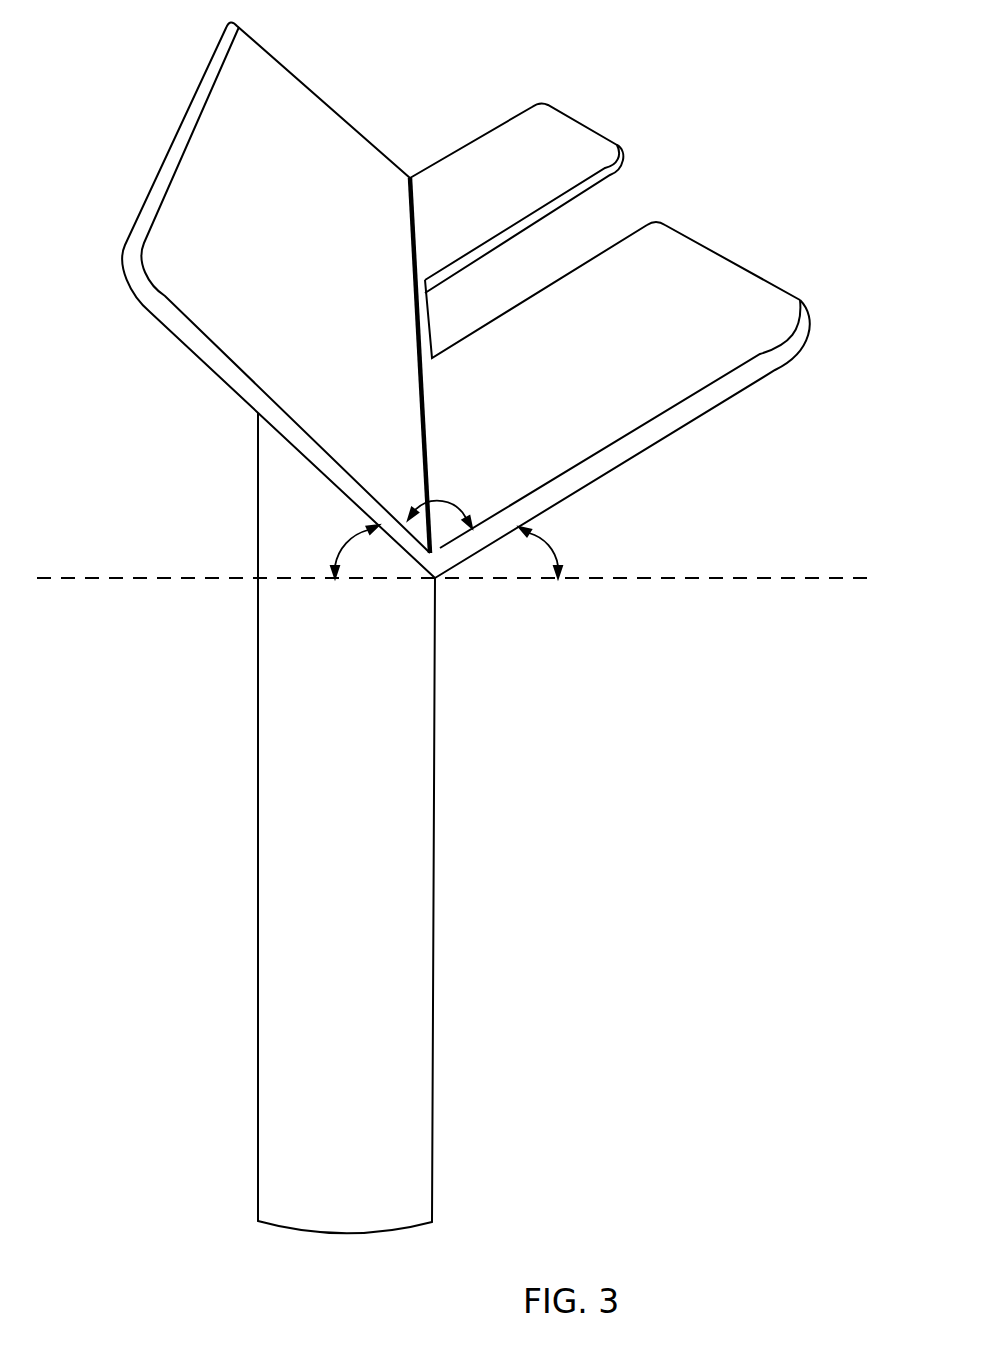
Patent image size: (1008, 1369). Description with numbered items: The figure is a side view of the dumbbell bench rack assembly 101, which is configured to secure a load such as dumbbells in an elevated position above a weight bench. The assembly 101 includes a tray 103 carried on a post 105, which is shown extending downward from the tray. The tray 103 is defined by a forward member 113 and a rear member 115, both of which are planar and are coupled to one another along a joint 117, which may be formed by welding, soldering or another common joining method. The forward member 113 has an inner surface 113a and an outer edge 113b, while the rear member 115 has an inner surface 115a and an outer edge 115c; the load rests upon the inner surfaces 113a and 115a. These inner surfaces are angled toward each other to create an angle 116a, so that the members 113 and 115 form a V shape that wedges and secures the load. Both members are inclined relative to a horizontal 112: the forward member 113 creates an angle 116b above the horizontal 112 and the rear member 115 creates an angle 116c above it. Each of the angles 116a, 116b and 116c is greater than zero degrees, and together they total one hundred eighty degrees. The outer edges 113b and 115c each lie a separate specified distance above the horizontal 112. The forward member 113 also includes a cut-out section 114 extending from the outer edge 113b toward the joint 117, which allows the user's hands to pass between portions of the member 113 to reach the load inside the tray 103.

The dumbbell bench rack assembly 101 is at (602, 751).
The tray 103 is at (463, 300).
The post 105 is at (258, 987).
The horizontal 112 is at (163, 578).
The forward member 113 is at (647, 333).
The inner surface 113a is at (542, 120).
The outer edge 113b is at (782, 282).
The cut-out section 114 is at (655, 185).
The rear member 115 is at (238, 300).
The inner surface 115a is at (274, 132).
The outer edge 115c is at (183, 127).
The angle 116a is at (452, 503).
The angle 116b is at (552, 547).
The angle 116c is at (350, 545).
The joint 117 is at (412, 288).